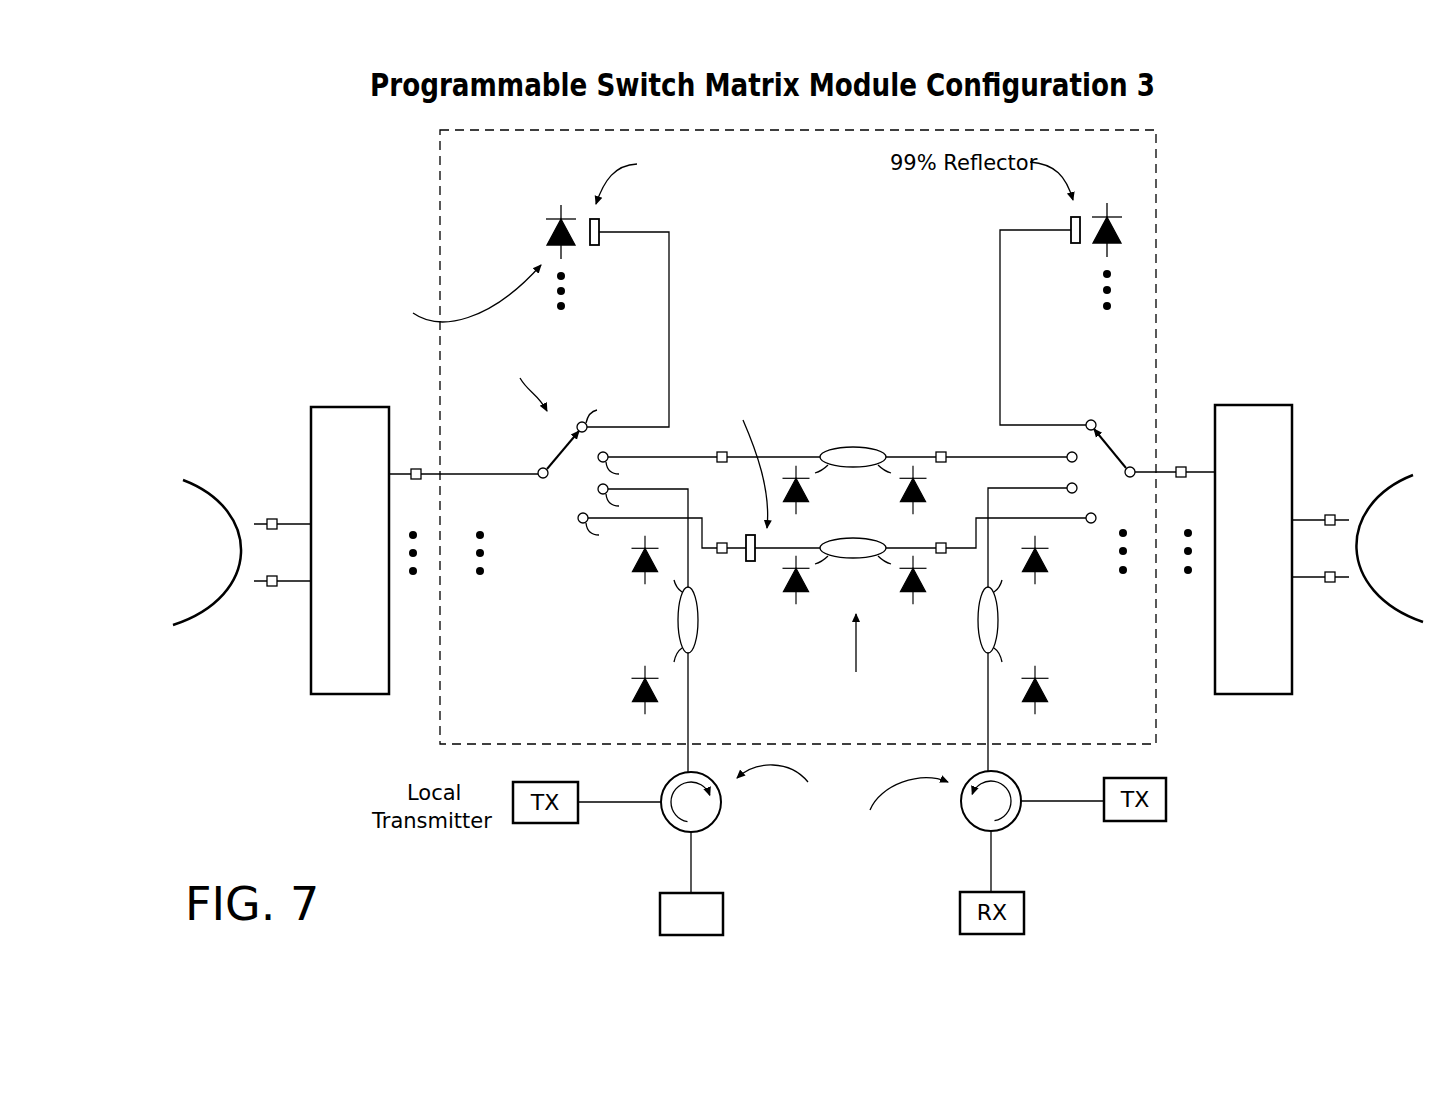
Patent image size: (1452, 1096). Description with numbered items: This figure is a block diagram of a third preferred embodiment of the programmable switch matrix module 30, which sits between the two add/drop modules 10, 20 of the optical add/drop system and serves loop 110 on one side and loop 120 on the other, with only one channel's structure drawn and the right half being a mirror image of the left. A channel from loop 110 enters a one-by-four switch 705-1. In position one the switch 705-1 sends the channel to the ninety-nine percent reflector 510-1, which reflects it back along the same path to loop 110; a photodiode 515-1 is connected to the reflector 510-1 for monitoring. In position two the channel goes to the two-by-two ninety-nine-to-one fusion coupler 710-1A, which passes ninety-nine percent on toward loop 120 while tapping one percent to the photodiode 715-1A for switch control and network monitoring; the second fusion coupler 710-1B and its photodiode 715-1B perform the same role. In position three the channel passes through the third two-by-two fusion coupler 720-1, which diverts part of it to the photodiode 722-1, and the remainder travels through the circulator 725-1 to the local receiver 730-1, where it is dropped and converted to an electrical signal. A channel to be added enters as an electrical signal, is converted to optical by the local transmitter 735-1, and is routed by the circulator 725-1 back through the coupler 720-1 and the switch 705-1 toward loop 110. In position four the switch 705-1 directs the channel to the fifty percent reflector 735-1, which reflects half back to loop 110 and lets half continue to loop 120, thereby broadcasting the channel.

The add/drop module 10 is at (350, 695).
The add/drop module 20 is at (1253, 695).
The programmable switch matrix module 30 is at (1156, 201).
The loop 110 is at (170, 612).
The loop 120 is at (1432, 586).
The 99% reflector 510-1 is at (594, 246).
The photodiode 515-1 is at (549, 238).
The 1×4 switch 705-1 is at (574, 434).
The 2×2 fusion coupler 710-1A is at (853, 447).
The 2×2 fusion coupler 710-1B is at (853, 558).
The photodiode 715-1A is at (808, 489).
The photodiode 715-1B is at (785, 582).
The third 2×2 99/1 fusion coupler 720-1 is at (698, 640).
The photodiode 722-1 is at (633, 567).
The circulator 725-1 is at (703, 831).
The local receiver 730-1 is at (723, 913).
The local transmitter 735-1 is at (750, 534).